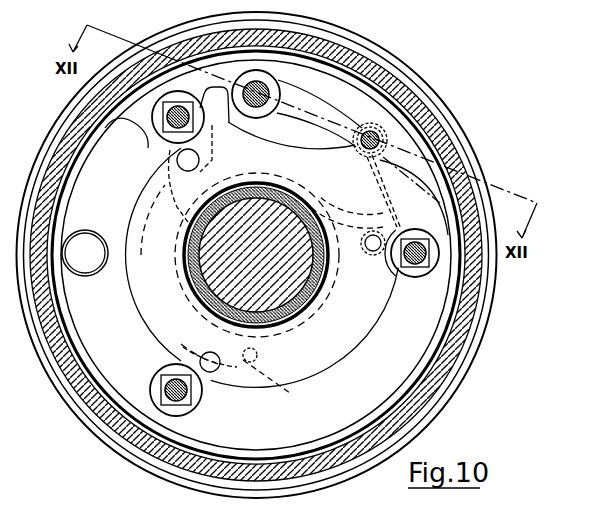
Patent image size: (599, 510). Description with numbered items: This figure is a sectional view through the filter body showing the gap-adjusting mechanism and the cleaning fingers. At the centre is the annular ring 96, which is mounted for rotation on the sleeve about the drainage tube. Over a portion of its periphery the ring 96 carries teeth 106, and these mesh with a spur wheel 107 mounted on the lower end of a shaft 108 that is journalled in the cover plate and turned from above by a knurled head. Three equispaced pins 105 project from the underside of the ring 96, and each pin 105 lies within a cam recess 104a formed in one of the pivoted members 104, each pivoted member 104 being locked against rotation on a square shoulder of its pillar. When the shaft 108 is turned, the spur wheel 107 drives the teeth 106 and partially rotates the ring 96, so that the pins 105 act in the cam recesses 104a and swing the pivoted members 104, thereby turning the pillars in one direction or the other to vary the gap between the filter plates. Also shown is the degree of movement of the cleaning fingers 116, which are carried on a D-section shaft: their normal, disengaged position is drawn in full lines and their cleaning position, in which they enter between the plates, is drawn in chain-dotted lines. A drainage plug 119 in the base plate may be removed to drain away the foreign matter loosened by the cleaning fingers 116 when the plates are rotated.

The ring 96 is at (147, 298).
The pivoted member 104 is at (160, 157).
The cam recess 104a is at (313, 301).
The pin 105 is at (215, 355).
The teeth 106 is at (382, 153).
The spur wheel 107 is at (381, 118).
The shaft 108 is at (393, 133).
The cleaning fingers 116 is at (340, 113).
The drainage plug 119 is at (90, 247).